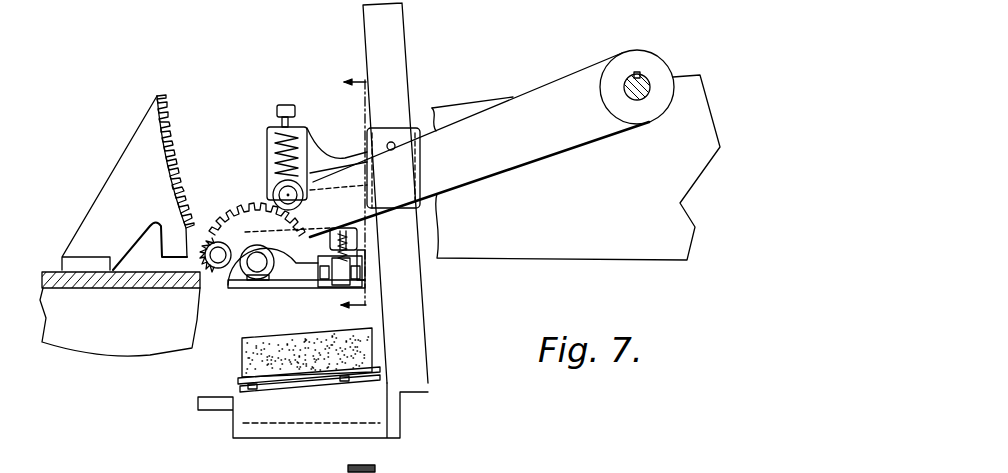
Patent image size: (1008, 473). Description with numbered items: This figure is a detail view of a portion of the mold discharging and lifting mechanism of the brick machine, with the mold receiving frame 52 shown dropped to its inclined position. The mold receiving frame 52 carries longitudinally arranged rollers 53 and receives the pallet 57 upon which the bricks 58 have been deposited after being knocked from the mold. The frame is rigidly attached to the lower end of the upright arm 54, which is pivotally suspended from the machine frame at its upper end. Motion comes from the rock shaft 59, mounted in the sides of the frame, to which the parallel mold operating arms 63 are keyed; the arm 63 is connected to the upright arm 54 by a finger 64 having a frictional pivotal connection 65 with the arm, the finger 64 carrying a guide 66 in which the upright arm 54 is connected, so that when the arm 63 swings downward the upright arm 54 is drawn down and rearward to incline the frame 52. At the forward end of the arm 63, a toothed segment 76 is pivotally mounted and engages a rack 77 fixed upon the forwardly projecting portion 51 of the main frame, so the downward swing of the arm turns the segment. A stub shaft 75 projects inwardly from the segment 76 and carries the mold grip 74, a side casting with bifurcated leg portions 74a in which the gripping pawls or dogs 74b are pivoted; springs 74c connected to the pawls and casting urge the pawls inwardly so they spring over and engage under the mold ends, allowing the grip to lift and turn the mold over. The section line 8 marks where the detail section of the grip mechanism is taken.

The section line 8— 8 is at (365, 195).
The forwardly projecting portion of the main frame 51 is at (576, 167).
The mold receiving frame 52 is at (402, 417).
The rollers 53 is at (338, 386).
The upright arms 54 is at (405, 43).
The pallet 57 is at (312, 381).
The bricks 58 is at (262, 352).
The second rock shaft 59 is at (648, 80).
The mold operating arms 63 is at (479, 145).
The finger 64 is at (327, 157).
The frictional pivotal connection 65 is at (278, 151).
The guide 66 is at (412, 142).
The mold grip 74 is at (353, 243).
The bifurcated leg portions 74a is at (320, 283).
The gripping pawls or dogs 74b is at (328, 287).
The springs 74c is at (360, 255).
The stub shaft 75 is at (209, 272).
The toothed segment 76 is at (252, 212).
The rack 77 is at (178, 152).